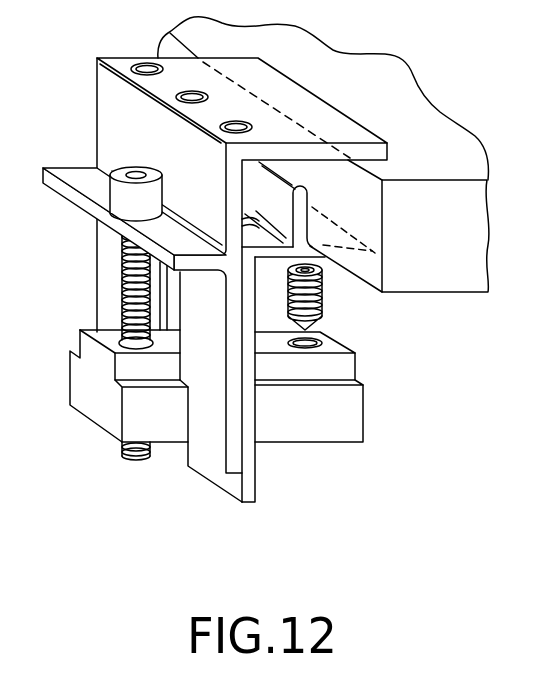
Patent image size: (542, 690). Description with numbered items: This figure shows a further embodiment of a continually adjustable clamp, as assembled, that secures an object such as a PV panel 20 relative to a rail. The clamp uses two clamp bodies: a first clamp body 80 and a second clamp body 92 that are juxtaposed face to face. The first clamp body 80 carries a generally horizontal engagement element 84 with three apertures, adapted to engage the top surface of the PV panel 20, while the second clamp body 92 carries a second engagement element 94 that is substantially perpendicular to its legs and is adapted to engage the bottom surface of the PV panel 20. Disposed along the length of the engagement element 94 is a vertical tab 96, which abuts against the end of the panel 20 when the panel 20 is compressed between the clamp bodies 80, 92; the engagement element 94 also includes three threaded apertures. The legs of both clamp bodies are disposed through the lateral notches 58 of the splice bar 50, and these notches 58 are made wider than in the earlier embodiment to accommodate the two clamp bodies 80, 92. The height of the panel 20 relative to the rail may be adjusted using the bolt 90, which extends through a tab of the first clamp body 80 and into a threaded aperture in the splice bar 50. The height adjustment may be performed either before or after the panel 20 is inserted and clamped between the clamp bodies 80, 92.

The PV panel 20 is at (452, 266).
The splice bar 50 is at (350, 413).
The lateral notches 58 is at (188, 426).
The first clamp body 80 is at (213, 447).
The engagement element 84 is at (385, 150).
The bolt 90 is at (117, 195).
The second clamp body 92 is at (258, 482).
The second engagement element 94 is at (320, 264).
The vertical tab 96 is at (304, 206).